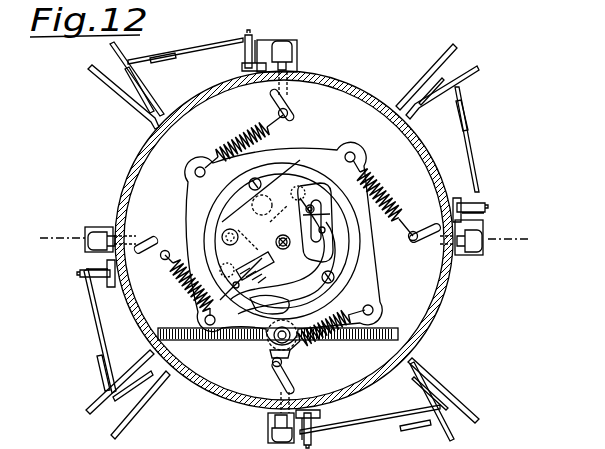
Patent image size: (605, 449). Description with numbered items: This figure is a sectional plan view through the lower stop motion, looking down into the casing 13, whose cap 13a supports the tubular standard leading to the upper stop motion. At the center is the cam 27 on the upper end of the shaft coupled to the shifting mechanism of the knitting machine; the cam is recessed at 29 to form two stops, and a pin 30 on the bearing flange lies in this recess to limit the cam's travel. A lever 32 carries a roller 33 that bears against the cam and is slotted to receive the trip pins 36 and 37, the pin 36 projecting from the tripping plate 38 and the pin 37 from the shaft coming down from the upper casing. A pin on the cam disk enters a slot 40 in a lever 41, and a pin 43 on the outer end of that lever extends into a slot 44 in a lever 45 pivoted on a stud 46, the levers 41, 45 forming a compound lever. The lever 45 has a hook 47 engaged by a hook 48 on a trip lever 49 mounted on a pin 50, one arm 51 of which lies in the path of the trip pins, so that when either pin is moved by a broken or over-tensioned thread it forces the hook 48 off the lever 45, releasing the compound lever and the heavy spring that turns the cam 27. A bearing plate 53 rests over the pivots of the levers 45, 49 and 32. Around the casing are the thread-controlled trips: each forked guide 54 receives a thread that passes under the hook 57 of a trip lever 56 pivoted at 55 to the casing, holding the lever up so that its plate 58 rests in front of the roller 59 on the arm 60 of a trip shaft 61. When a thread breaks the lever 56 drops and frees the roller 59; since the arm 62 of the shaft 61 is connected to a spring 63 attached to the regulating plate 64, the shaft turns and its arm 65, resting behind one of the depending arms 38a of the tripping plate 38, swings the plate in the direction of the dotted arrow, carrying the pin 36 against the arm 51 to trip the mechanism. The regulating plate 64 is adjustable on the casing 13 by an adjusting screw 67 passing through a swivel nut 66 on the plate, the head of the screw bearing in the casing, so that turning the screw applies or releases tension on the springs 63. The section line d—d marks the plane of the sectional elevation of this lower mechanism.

The casing of the lower stop motion 13 is at (134, 152).
The cap of the lower stop motion 13a is at (420, 442).
The cam disk 27 is at (284, 212).
The recess forming two stops 29 is at (326, 283).
The pin 30 is at (326, 231).
The lever 32 is at (225, 230).
The roller 33 is at (266, 201).
The trip pin 36 is at (281, 234).
The trip pin 37 is at (247, 233).
The tripping plate 38 is at (380, 283).
The depending arm 38a is at (176, 272).
The slot 40 is at (258, 265).
The lever 41 is at (286, 296).
The pin 43 is at (315, 208).
The slot 44 is at (331, 216).
The lever 45 is at (322, 250).
The stud 46 is at (306, 192).
The hook 47 is at (231, 302).
The hook 48 is at (269, 304).
The trip lever 49 is at (234, 289).
The pin 50 is at (217, 264).
The arm 51 is at (253, 270).
The bearing plate 53 is at (282, 239).
The forked guide 54 is at (112, 45).
The pivot 55 is at (250, 36).
The trip lever 56 is at (196, 52).
The hook portion 57 is at (136, 96).
The plate 58 is at (292, 40).
The roller 59 is at (292, 50).
The arm 60 is at (297, 69).
The trip shaft 61 is at (290, 110).
The arm 62 is at (278, 113).
The spring 63 is at (246, 138).
The regulating plate 64 is at (199, 178).
The arm 65 is at (347, 151).
The swivel nut 66 is at (275, 360).
The adjusting screw 67 is at (352, 341).
The section line d— d is at (287, 238).